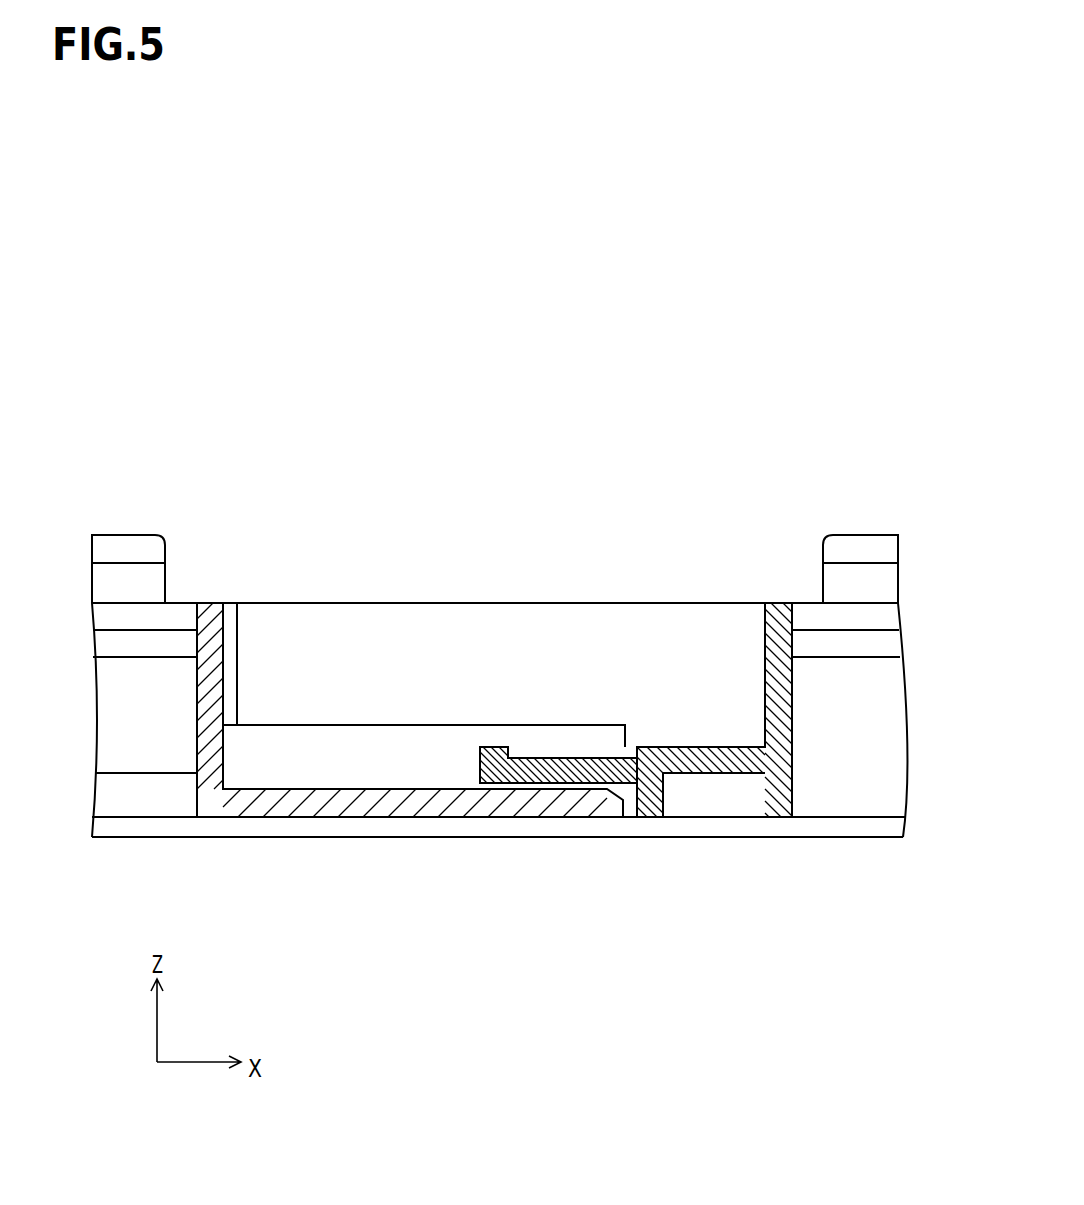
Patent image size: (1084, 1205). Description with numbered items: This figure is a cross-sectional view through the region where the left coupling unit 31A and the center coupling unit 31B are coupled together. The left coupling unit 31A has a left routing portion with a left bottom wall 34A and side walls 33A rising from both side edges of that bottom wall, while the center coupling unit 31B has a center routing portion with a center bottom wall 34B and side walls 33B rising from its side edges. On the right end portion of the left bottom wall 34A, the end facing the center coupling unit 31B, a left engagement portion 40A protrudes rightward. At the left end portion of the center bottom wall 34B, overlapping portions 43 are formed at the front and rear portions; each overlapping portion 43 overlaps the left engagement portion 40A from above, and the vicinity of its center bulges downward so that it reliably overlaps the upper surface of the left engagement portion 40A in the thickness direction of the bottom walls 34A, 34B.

The left coupling unit 31A is at (162, 802).
The center coupling unit 31B is at (837, 802).
The side walls 33A is at (148, 617).
The side walls 33B is at (712, 627).
The left bottom wall 34A is at (280, 807).
The center bottom wall 34B is at (706, 750).
The left engagement portion 40A is at (313, 743).
The overlapping portions 43 is at (495, 760).